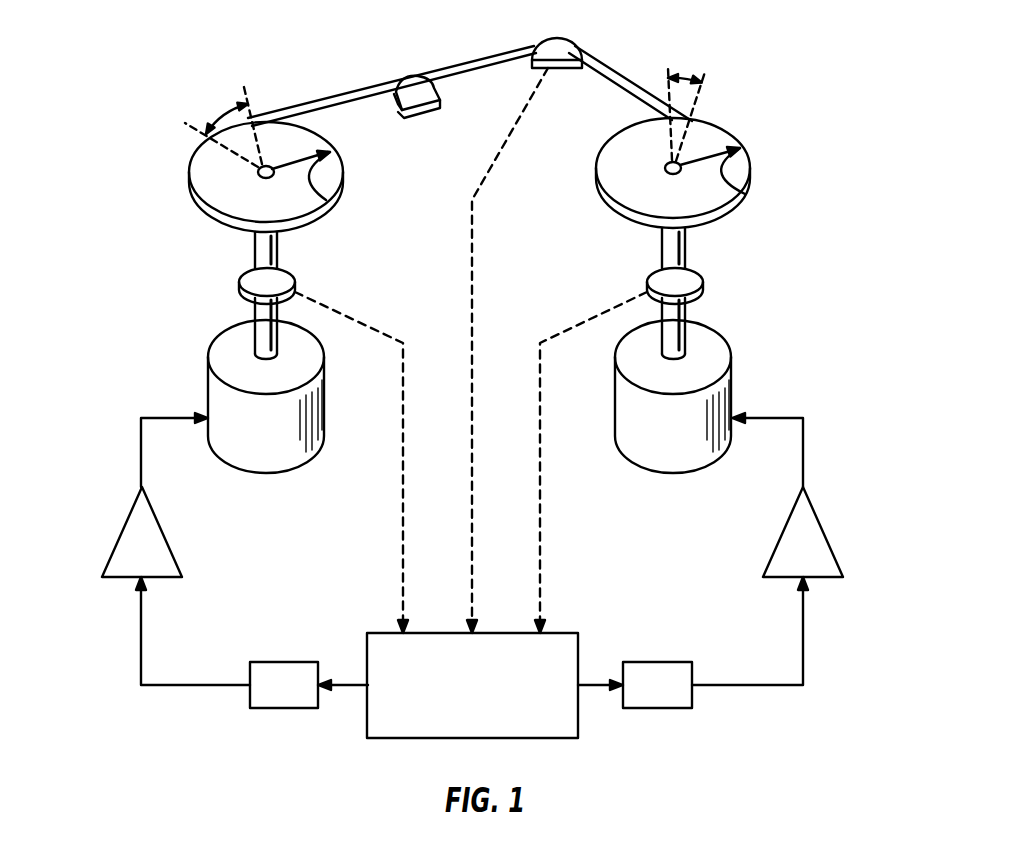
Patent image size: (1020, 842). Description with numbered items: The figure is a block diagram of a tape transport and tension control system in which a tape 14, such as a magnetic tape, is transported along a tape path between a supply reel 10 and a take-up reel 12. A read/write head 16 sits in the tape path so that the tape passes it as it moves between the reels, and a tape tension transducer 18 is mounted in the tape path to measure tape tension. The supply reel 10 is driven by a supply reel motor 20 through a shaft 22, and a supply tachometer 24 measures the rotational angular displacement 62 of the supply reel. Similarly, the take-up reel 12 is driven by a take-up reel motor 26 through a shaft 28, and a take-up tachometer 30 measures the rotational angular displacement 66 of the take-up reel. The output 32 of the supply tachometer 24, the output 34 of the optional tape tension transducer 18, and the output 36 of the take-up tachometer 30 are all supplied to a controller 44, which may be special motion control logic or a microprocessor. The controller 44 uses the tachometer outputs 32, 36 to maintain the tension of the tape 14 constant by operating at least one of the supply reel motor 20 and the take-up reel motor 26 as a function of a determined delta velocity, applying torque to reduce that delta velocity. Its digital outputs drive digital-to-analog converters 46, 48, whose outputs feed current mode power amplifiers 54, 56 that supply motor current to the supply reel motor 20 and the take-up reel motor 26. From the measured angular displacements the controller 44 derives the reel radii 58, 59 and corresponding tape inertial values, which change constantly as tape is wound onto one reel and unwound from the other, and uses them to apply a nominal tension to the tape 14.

The supply reel 10 is at (202, 164).
The take-up reel 12 is at (605, 162).
The tape 14 is at (370, 80).
The read/write head 16 is at (432, 112).
The tape tension transducer 18 is at (560, 40).
The supply reel motor 20 is at (228, 342).
The shaft 22 is at (254, 250).
The supply tachometer 24 is at (243, 278).
The take-up reel motor 26 is at (712, 342).
The shaft 28 is at (688, 250).
The take-up tachometer 30 is at (697, 280).
The output of the supply tachometer 32 is at (402, 526).
The output of the tape tension transducer 34 is at (473, 410).
The output of the take-up tachometer 36 is at (541, 526).
The controller 44 is at (385, 633).
The digital-to-analog converter 46 is at (262, 662).
The digital-to-analog converter 48 is at (683, 662).
The current mode power amplifier 54 is at (120, 530).
The current mode power amplifier 56 is at (826, 530).
The reel radius 58 is at (328, 201).
The reel radius 59 is at (748, 194).
The rotational angular displacement 62 is at (222, 120).
The rotational angular displacement 66 is at (690, 78).